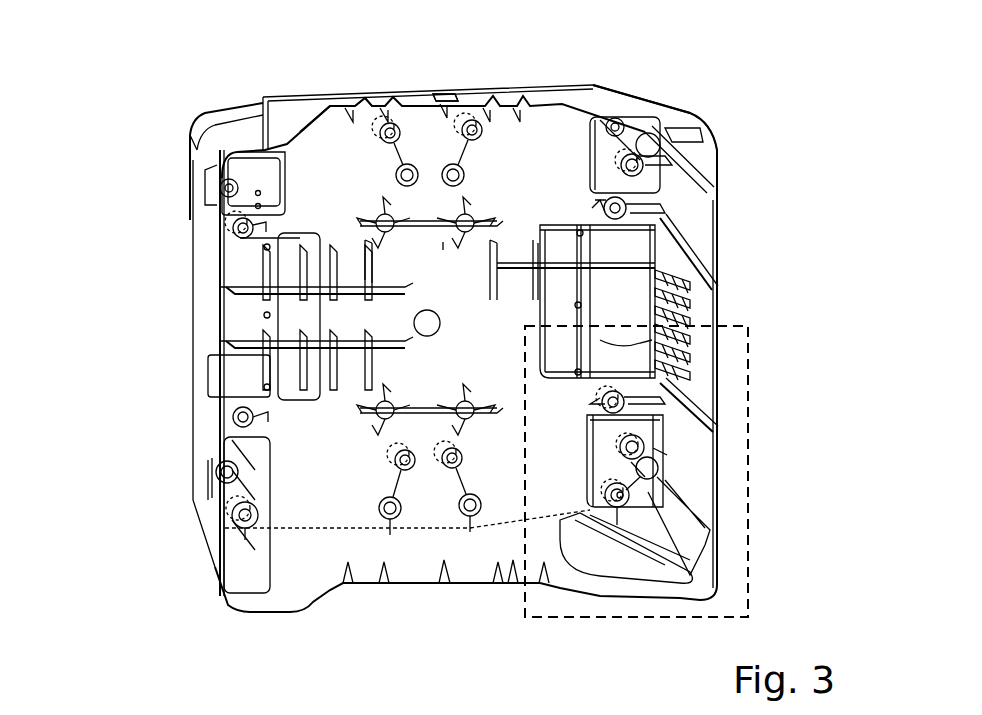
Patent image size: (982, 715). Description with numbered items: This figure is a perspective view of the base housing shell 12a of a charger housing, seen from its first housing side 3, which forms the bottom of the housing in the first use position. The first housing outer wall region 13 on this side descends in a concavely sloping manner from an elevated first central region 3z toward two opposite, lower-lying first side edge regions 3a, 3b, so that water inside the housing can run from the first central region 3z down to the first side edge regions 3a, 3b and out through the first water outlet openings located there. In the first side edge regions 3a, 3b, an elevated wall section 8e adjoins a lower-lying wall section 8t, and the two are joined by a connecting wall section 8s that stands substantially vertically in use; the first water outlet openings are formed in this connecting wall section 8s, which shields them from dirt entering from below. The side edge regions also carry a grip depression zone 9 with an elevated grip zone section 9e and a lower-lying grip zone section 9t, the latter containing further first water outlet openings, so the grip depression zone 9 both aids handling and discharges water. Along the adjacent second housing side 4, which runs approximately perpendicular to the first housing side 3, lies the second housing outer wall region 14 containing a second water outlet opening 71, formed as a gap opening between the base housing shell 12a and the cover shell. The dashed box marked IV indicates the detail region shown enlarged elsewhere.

The first housing side 3 is at (325, 150).
The first side edge region 3b is at (268, 180).
The first side edge region 3a is at (607, 160).
The first central region 3z is at (443, 242).
The second housing side 4 is at (320, 105).
The second housing outer wall region 14 is at (355, 107).
The second water outlet opening 71 is at (442, 100).
The first housing outer wall region 13 is at (557, 137).
The base housing shell 12a is at (718, 158).
The grip depression zone 9 is at (230, 256).
The lower-lying grip zone section 9t is at (660, 313).
The elevated grip zone section 9e is at (640, 341).
The lower-lying wall section 8t is at (580, 430).
The elevated wall section 8e is at (665, 475).
The connecting wall section 8s is at (600, 462).
The detail region IV is at (748, 592).